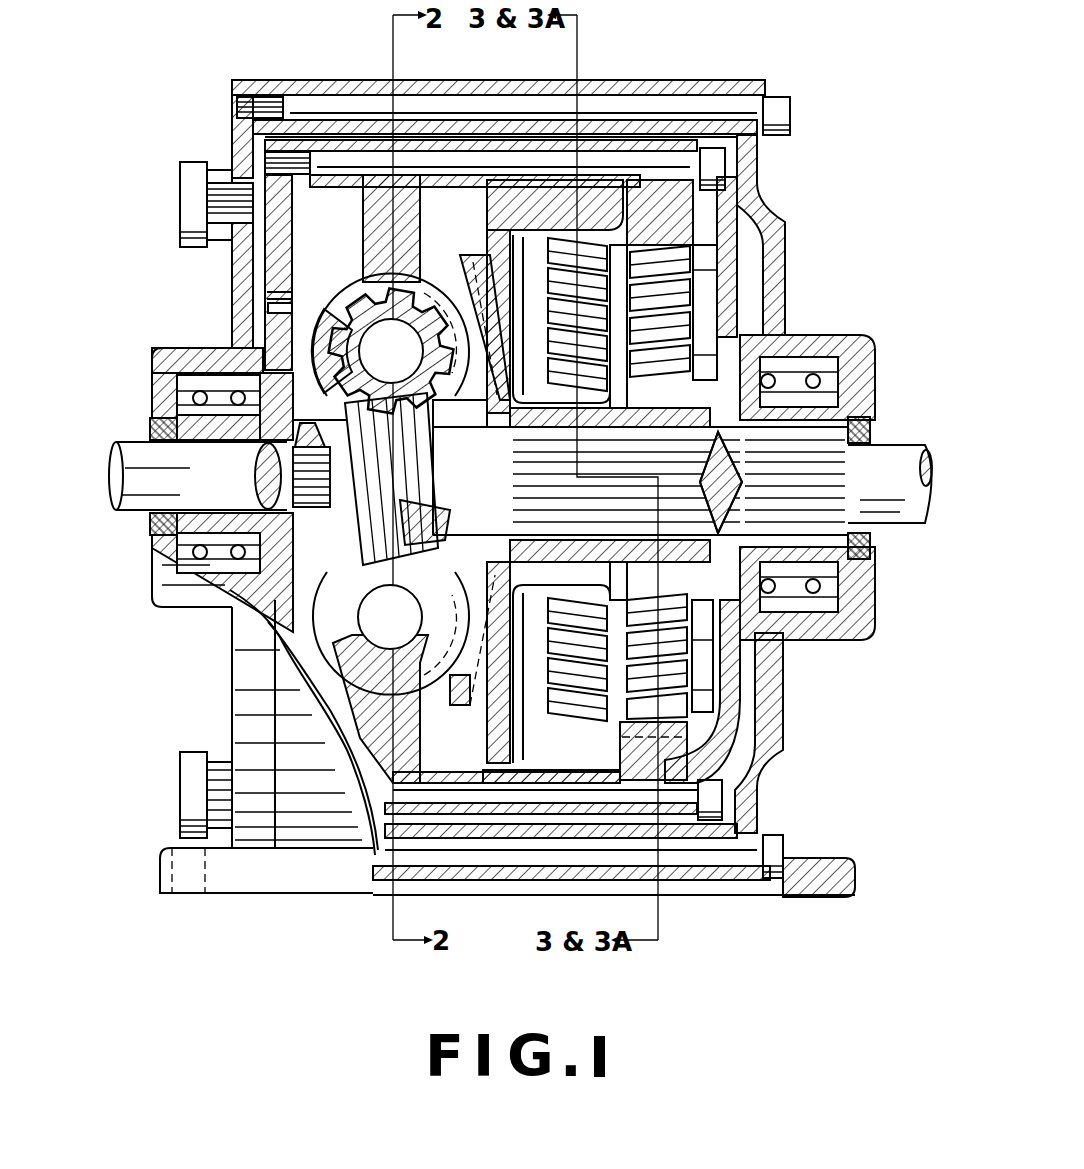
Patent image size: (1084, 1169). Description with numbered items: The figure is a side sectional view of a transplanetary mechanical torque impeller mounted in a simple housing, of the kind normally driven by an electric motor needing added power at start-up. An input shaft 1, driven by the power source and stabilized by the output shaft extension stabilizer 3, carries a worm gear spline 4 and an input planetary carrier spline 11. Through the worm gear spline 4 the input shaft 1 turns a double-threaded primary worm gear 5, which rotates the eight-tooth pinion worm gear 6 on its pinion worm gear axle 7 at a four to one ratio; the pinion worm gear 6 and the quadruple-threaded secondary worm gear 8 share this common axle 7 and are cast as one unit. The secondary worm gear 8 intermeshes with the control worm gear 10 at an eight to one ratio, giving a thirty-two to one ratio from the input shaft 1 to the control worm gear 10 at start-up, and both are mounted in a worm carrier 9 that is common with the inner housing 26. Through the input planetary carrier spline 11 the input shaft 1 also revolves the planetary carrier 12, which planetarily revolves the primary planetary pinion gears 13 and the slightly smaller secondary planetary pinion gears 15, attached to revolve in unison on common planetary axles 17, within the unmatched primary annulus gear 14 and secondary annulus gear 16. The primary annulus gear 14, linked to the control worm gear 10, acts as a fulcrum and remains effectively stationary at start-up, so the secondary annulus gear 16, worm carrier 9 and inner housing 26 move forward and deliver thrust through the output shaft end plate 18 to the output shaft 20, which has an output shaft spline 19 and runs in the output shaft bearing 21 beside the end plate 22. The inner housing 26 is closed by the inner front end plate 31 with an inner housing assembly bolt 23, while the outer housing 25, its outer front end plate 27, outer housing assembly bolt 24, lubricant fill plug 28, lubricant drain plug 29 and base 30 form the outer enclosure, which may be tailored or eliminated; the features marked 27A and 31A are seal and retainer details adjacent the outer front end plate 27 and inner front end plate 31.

The input shaft 1 is at (138, 480).
The output shaft extension stabilizer 3 is at (253, 477).
The worm gear spline 4 is at (322, 428).
The primary worm gear 5 is at (410, 440).
The pinion worm gear 6 is at (467, 420).
The pinion worm gear axle 7 is at (404, 366).
The secondary worm gear 8 is at (342, 298).
The worm carrier 9 is at (400, 213).
The control worm gear 10 is at (463, 277).
The input planetary carrier spline 11 is at (510, 473).
The planetary carrier 12 is at (628, 402).
The primary planetary pinion gear 13 is at (580, 265).
The primary annulus gear 14 is at (527, 226).
The secondary planetary pinion gear 15 is at (697, 273).
The secondary annulus gear 16 is at (670, 226).
The planetary axle 17 is at (697, 313).
The output shaft end plate 18 is at (817, 417).
The output shaft spline 19 is at (820, 473).
The output shaft 20 is at (912, 500).
The output shaft bearing 21 is at (827, 590).
The end plate 22 is at (768, 243).
The inner housing assembly bolt 23 is at (717, 172).
The outer housing assembly bolt 24 is at (778, 118).
The outer housing 25 is at (690, 80).
The inner housing 26 is at (346, 174).
The outer front end plate 27 is at (240, 140).
The seal 27A is at (150, 525).
The lubricant fill plug 28 is at (193, 203).
The lubricant drain plug 29 is at (190, 790).
The base 30 is at (282, 884).
The inner front end plate 31 is at (280, 243).
The retainer 31A is at (285, 318).